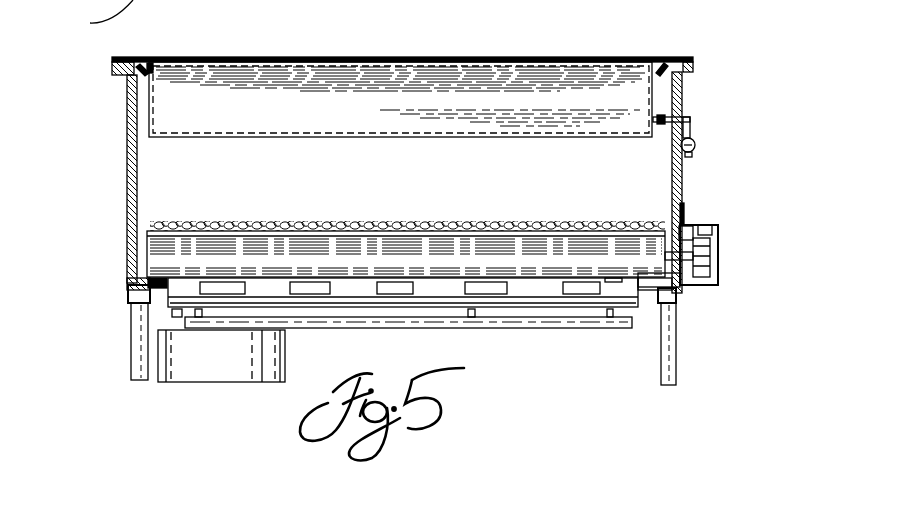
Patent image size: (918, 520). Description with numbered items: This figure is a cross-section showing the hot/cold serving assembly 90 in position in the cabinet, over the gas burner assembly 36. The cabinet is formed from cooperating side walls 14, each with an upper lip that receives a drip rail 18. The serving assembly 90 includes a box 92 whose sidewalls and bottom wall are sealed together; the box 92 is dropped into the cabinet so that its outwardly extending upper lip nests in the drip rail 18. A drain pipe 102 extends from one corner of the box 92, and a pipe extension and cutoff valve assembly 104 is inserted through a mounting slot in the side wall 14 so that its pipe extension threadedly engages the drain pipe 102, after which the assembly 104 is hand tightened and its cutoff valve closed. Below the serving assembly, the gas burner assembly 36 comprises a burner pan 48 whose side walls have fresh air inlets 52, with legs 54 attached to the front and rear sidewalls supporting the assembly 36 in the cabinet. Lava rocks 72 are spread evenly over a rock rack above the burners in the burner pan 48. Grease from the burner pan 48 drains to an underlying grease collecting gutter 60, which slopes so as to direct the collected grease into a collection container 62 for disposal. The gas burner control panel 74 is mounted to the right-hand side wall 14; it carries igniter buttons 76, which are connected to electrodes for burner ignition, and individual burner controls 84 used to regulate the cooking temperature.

The hot/cold serving assembly 90 is at (674, 47).
The drip rail 18 is at (693, 61).
The box 92 is at (238, 115).
The drain pipe 102 is at (698, 98).
The pipe extension and cutoff valve assembly 104 is at (694, 156).
The side wall 14 is at (396, 190).
The lava rocks 72 is at (240, 222).
The burner pan 48 is at (148, 250).
The legs 54 is at (130, 289).
The fresh air inlets 52 is at (487, 289).
The grease collecting gutter 60 is at (387, 321).
The collection container 62 is at (224, 368).
The gas burner control panel 74 is at (734, 257).
The burner controls 84 is at (712, 226).
The igniter buttons 76 is at (690, 228).
The gas burner assembly 36 is at (688, 299).